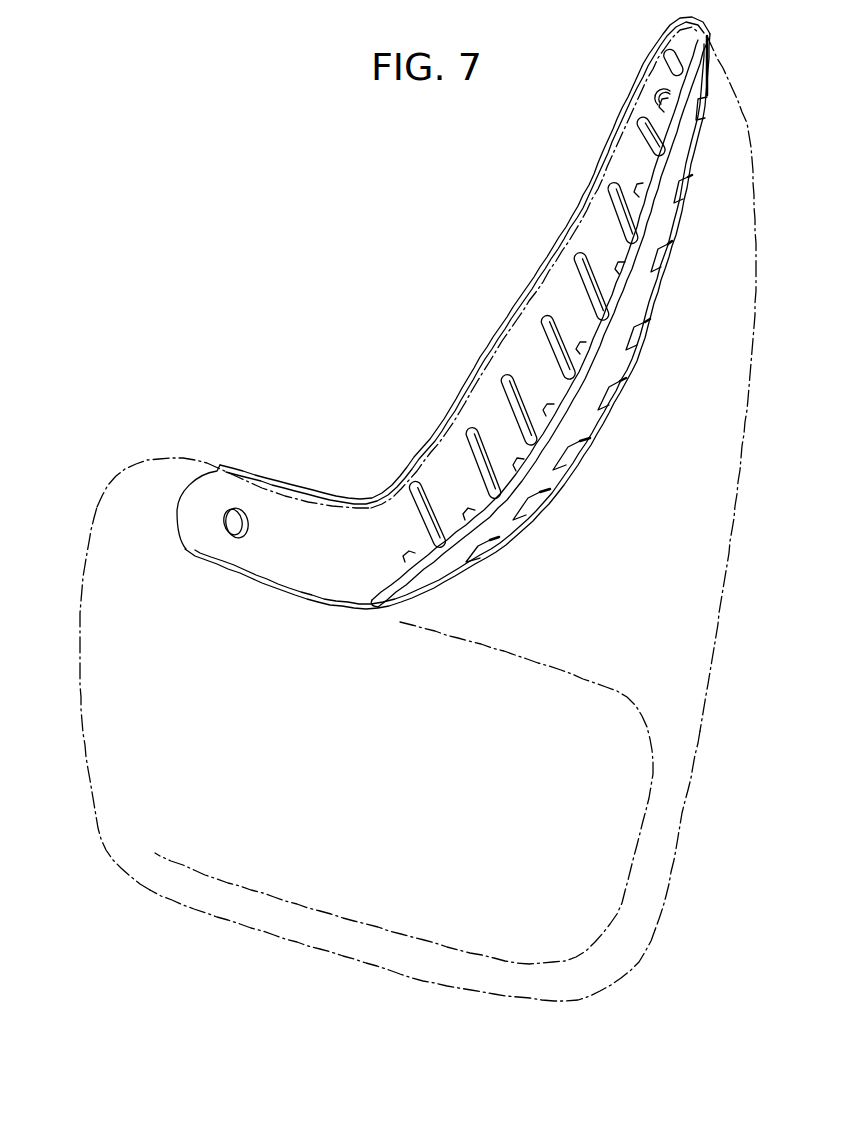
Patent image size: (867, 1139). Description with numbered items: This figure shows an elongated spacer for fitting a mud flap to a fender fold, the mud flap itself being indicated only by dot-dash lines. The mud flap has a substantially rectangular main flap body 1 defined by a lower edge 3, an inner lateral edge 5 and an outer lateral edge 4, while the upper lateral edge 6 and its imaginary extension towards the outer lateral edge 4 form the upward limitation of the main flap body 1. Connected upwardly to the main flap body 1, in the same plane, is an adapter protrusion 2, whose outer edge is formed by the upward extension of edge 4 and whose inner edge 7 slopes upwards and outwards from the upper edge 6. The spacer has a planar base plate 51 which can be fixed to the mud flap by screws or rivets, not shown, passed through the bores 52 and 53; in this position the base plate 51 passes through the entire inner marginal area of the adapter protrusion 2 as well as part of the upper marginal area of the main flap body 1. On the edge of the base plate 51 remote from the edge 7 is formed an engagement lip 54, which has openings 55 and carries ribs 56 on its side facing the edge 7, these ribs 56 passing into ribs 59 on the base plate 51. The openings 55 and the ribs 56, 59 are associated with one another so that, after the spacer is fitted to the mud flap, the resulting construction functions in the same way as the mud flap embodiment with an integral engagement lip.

The main flap body 1 is at (612, 870).
The adapter protrusion 2 is at (705, 533).
The lower edge 3 is at (274, 937).
The outer lateral edge 4 is at (703, 728).
The inner lateral edge 5 is at (93, 808).
The upper lateral edge 6 is at (165, 457).
The inner edge 7 is at (556, 263).
The base plate 51 is at (476, 410).
The bore 52 is at (238, 514).
The bore 53 is at (662, 100).
The engagement lip 54 is at (672, 230).
The opening 55 is at (688, 190).
The rib 56 is at (620, 266).
The rib 59 is at (505, 377).